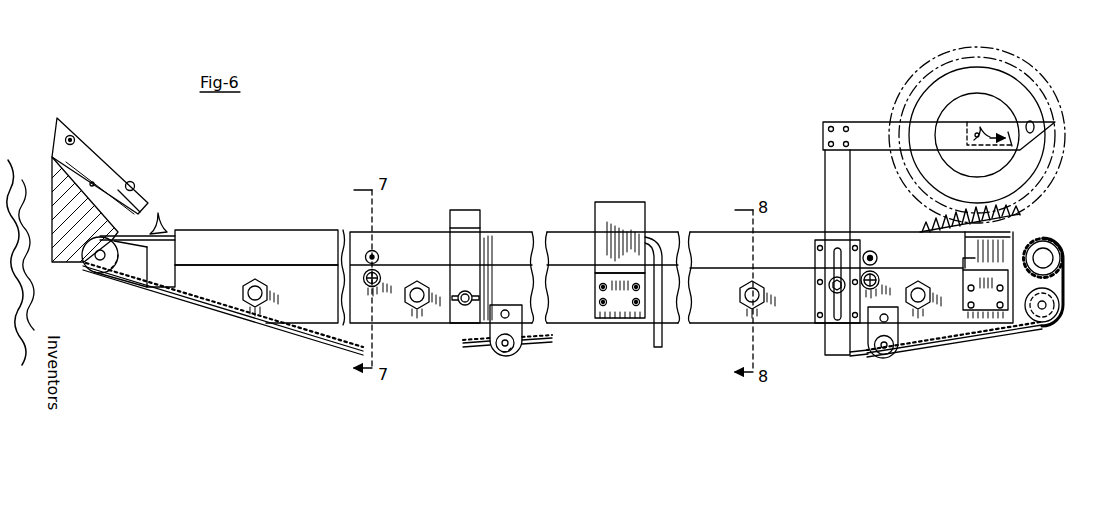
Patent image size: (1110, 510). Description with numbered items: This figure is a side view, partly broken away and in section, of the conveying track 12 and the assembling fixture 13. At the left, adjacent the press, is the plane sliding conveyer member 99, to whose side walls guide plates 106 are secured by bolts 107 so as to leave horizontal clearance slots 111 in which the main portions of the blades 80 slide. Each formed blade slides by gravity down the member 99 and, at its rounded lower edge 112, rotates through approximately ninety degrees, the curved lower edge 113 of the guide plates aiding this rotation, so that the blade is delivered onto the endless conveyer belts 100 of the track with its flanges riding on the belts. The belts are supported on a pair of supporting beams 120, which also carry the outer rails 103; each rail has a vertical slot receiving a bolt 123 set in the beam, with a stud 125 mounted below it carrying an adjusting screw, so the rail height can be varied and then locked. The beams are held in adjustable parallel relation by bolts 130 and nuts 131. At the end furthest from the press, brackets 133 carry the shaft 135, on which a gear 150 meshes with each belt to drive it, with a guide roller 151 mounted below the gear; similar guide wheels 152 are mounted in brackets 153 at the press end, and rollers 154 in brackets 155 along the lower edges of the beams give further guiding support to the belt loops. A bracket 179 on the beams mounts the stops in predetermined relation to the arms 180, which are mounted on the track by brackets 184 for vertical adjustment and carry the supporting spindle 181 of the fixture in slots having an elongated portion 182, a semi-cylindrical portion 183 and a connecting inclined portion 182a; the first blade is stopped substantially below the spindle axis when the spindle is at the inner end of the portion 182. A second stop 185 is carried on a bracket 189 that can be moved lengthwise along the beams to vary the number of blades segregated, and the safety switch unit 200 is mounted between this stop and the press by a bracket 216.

The track 12 is at (540, 200).
The assembly fixture 13 is at (916, 62).
The blade 80 is at (88, 160).
The plane sliding conveyer member 99 is at (96, 181).
The endless conveyer belt 100 is at (302, 340).
The outer rail 103 is at (280, 237).
The guide plate 106 is at (90, 143).
The bolt 107 is at (133, 183).
The horizontal clearance slot 111 is at (55, 153).
The lower edge 112 is at (134, 226).
The curved lower edge 113 is at (131, 209).
The supporting beam 120 is at (568, 313).
The bolt 123 is at (375, 250).
The stud 125 is at (377, 275).
The bolt 130 is at (412, 304).
The nut 131 is at (245, 308).
The bracket 133 is at (1015, 326).
The shaft 135 is at (1036, 258).
The gear 150 is at (1070, 310).
The guide roller 151 is at (1038, 324).
The guide wheel 152 is at (84, 273).
The bracket 153 is at (127, 275).
The roller 154 is at (516, 351).
The bracket 155 is at (497, 351).
The bracket 179 is at (973, 270).
The arm 180 is at (863, 127).
The supporting spindle 181 is at (975, 128).
The elongated slot portion 182 is at (1000, 152).
The inclined slot portion 182a is at (1012, 146).
The semi-cylindrical slot portion 183 is at (1032, 120).
The bracket 184 is at (822, 290).
The stop 185 is at (612, 192).
The bracket 189 is at (617, 308).
The safety switch unit 200 is at (469, 217).
The bracket 216 is at (478, 283).